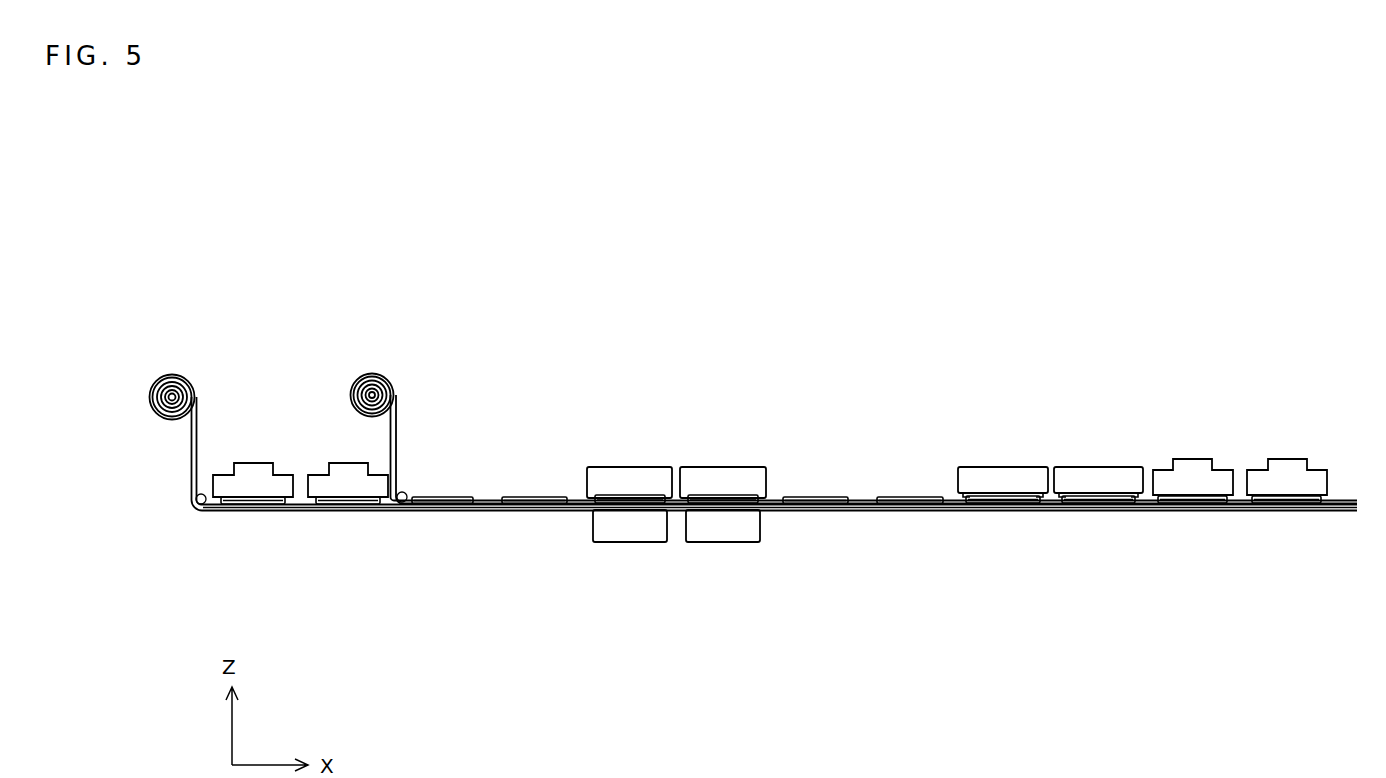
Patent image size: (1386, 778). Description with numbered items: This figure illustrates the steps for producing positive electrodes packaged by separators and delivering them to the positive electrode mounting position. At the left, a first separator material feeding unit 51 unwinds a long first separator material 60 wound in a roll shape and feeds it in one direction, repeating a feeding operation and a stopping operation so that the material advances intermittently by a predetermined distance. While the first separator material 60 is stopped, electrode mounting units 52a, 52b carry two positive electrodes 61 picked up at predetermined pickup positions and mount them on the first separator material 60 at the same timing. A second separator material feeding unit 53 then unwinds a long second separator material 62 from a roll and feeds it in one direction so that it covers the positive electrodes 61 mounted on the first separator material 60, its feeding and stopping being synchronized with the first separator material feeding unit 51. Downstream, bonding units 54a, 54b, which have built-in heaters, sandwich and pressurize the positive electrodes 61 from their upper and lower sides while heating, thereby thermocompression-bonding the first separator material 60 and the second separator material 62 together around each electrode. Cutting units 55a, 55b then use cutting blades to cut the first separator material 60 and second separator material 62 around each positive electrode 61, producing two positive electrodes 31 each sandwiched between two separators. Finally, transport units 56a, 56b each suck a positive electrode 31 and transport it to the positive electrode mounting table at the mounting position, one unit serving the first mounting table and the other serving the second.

The positive electrode 31 is at (1199, 531).
The first separator material feeding unit 51 is at (175, 374).
The electrode mounting unit 52a is at (254, 463).
The electrode mounting unit 52b is at (348, 463).
The second separator material feeding unit 53 is at (375, 372).
The bonding unit 54a is at (632, 467).
The bonding unit 54b is at (725, 467).
The cutting unit 55a is at (1010, 467).
The cutting unit 55b is at (1105, 467).
The transport unit 56a is at (1195, 459).
The transport unit 56b is at (1288, 459).
The first separator material 60 is at (190, 438).
The positive electrode 61 is at (213, 508).
The second separator material 62 is at (396, 430).